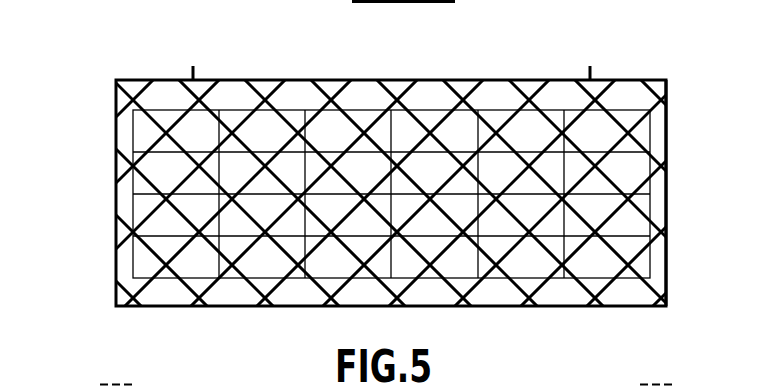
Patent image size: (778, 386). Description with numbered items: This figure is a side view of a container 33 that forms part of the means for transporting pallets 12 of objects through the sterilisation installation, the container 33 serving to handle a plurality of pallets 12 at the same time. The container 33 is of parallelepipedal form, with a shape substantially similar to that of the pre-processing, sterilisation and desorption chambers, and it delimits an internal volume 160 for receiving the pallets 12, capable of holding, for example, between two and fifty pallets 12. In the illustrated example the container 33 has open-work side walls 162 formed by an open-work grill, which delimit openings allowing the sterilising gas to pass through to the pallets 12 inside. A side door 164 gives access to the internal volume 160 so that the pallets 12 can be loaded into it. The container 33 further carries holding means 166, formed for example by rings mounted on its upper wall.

The pallet 12 is at (628, 118).
The container 33 is at (113, 192).
The internal volume 160 is at (364, 98).
The open-work side walls 162 is at (491, 108).
The side door 164 is at (667, 187).
The holding means 166 is at (190, 77).